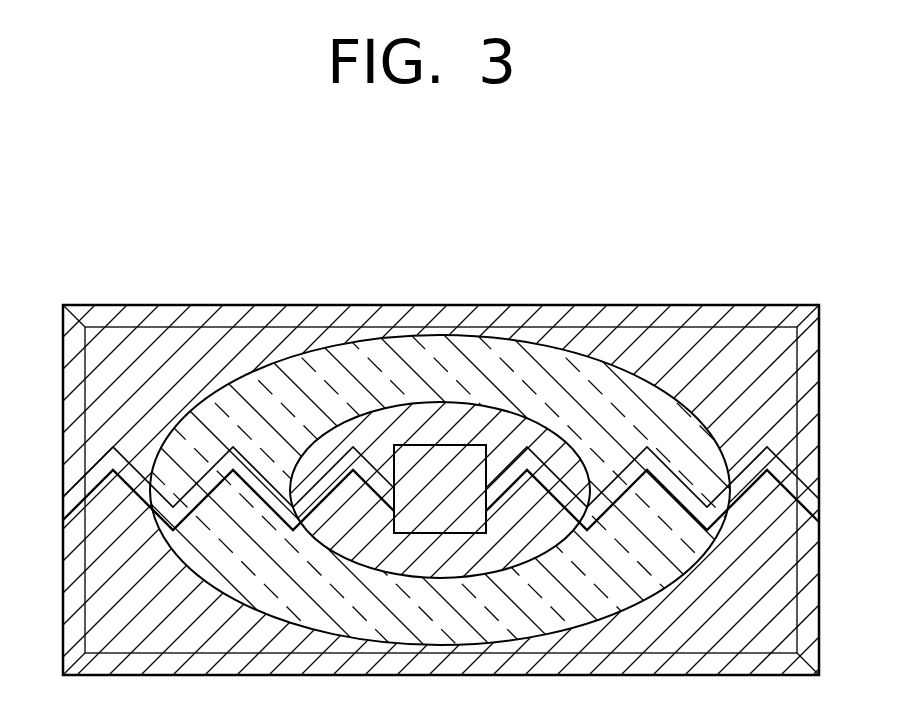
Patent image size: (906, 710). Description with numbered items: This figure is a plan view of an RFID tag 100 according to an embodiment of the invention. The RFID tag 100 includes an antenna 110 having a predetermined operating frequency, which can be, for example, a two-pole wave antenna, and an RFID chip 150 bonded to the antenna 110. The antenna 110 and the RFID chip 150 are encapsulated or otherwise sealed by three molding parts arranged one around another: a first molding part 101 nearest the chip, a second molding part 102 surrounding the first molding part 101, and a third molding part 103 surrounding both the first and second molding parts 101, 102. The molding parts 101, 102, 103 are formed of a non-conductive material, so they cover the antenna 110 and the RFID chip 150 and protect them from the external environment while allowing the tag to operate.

The RFID tag 100 is at (78, 260).
The antenna 110 is at (232, 452).
The RFID chip 150 is at (443, 460).
The first molding part 101 is at (512, 432).
The second molding part 102 is at (582, 388).
The third molding part 103 is at (663, 343).